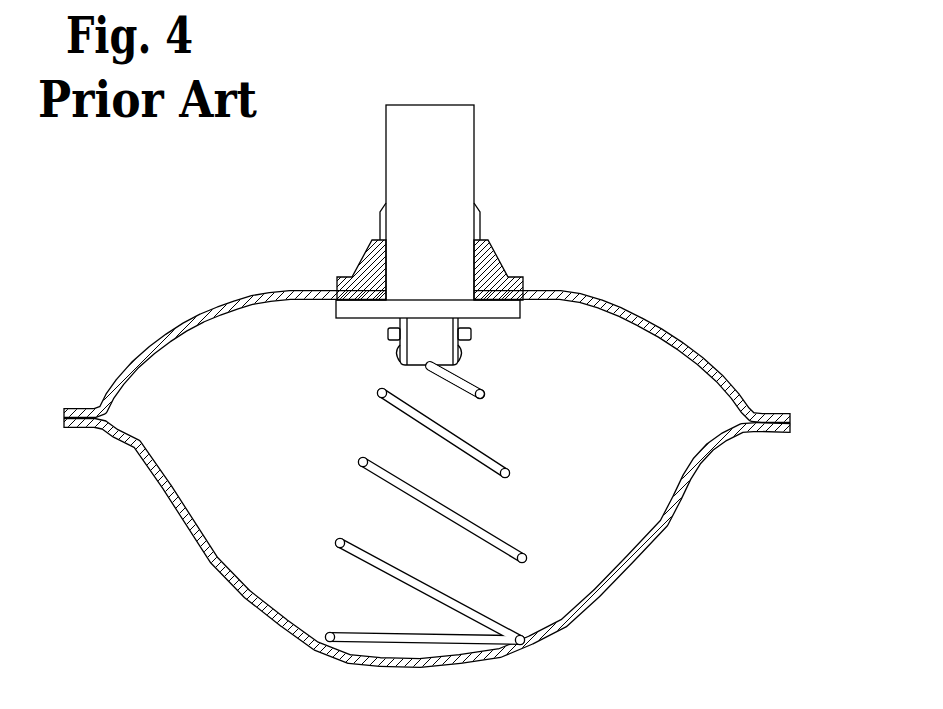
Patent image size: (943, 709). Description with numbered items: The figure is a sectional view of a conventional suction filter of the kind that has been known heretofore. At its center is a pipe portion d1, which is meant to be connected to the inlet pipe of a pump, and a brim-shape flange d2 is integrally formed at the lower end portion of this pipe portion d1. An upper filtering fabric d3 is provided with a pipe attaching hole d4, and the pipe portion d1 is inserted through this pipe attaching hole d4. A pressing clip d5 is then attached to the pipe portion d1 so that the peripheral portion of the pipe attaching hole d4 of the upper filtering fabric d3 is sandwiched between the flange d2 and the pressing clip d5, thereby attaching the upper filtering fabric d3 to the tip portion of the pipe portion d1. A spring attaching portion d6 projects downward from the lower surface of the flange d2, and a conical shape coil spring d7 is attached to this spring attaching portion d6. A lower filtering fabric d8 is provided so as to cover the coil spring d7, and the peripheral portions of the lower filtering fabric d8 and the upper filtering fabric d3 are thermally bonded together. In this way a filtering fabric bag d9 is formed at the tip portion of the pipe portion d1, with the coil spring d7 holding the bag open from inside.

The pipe portion d1 is at (447, 160).
The flange d2 is at (520, 318).
The upper filtering fabric d3 is at (660, 322).
The pipe attaching hole d4 is at (357, 263).
The pressing clip d5 is at (500, 263).
The spring attaching portion d6 is at (405, 355).
The coil spring d7 is at (528, 563).
The lower filtering fabric d8 is at (657, 537).
The filtering fabric bag d9 is at (747, 370).